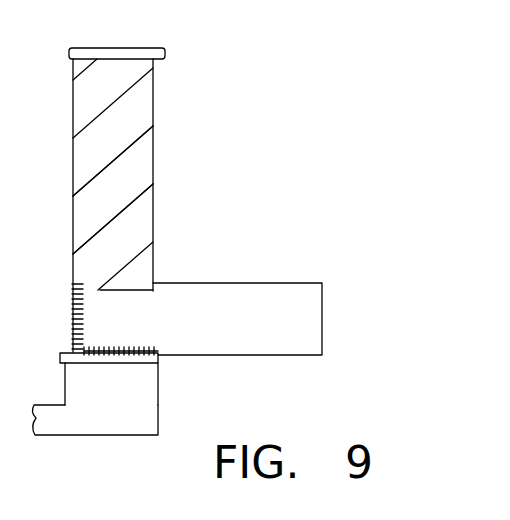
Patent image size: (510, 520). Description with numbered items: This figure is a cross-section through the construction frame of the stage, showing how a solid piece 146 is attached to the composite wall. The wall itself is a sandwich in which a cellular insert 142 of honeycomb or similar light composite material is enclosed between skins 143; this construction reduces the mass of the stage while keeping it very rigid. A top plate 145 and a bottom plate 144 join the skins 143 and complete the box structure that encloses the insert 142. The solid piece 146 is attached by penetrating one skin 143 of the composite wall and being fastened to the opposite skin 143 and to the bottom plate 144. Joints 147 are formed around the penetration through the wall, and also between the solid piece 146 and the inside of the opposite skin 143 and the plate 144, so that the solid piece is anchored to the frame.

The cellular insert 142 is at (114, 180).
The skins 143 is at (83, 208).
The bottom plate 144 is at (119, 369).
The top plate 145 is at (170, 53).
The solid piece 146 is at (327, 315).
The joints 147 is at (90, 301).